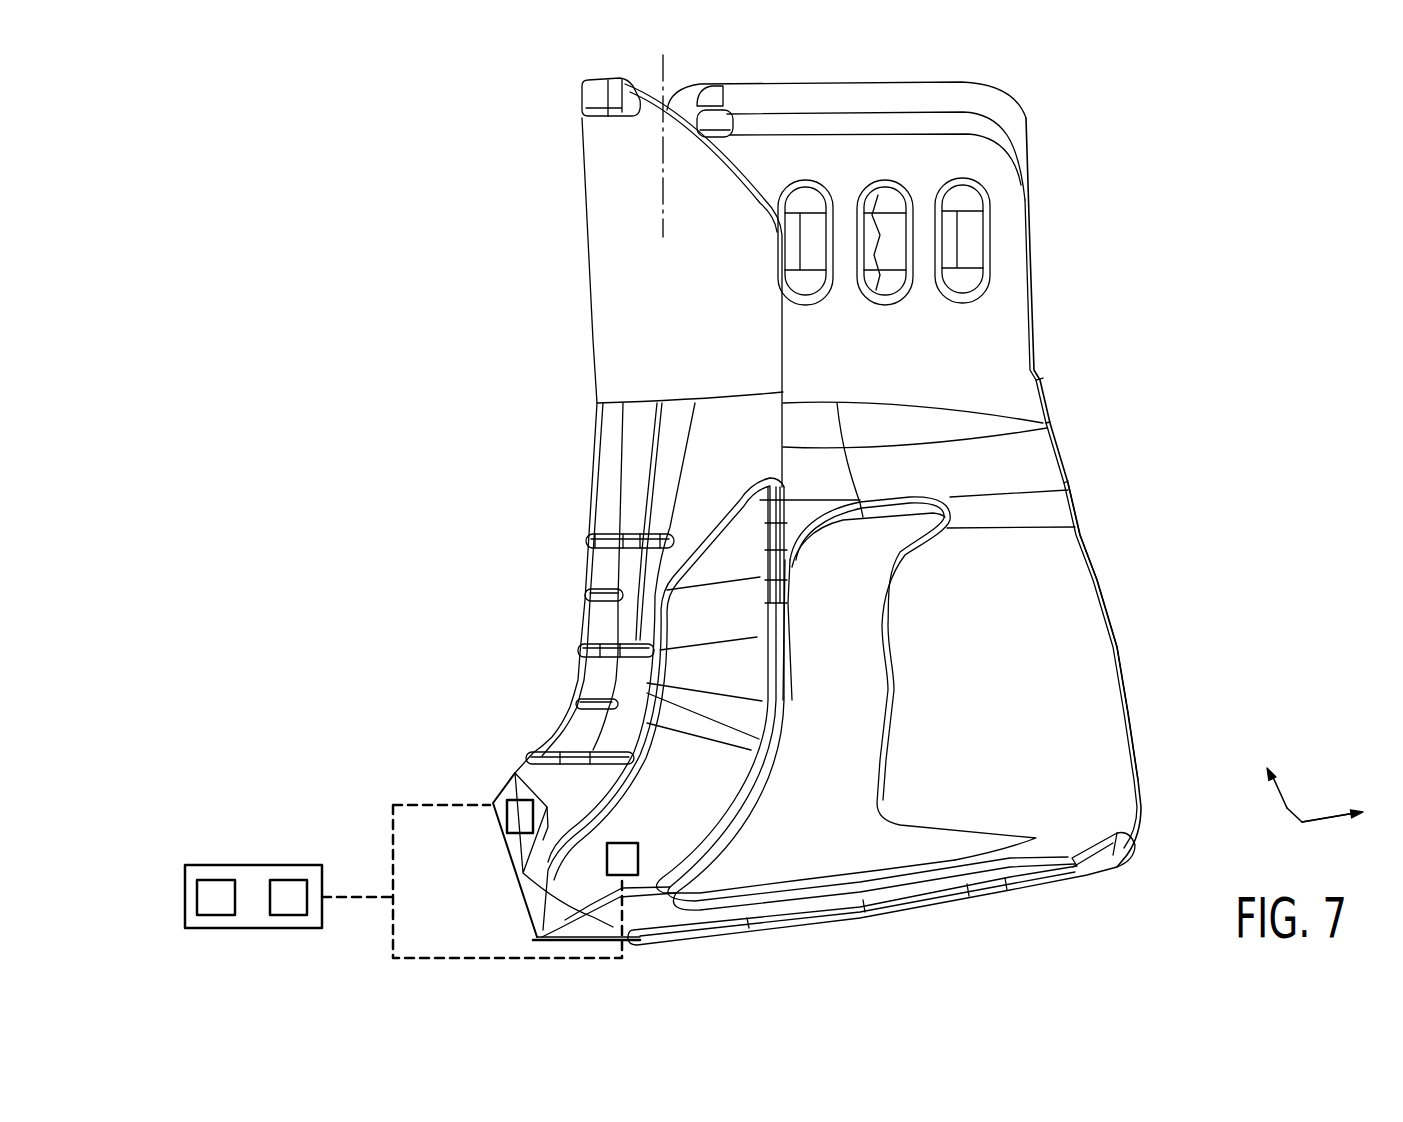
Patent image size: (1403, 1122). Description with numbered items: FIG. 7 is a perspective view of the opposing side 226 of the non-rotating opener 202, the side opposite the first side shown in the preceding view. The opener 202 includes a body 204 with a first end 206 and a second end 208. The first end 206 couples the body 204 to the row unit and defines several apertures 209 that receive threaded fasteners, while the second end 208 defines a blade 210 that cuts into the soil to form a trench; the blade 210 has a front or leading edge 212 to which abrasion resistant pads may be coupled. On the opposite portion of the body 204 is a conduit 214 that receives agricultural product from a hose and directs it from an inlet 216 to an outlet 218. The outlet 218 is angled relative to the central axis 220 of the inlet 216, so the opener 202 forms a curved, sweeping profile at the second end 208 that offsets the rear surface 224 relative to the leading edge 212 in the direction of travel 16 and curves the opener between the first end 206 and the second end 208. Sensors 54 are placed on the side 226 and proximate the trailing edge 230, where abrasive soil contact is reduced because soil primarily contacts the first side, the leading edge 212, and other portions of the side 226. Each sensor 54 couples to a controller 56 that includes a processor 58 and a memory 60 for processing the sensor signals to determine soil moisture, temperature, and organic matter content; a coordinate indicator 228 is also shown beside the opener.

The direction of travel 16 is at (1325, 818).
The sensor 54 is at (505, 820).
The controller 56 is at (185, 897).
The processor 58 is at (210, 880).
The memory 60 is at (283, 880).
The opener 202 is at (1150, 240).
The body 204 is at (405, 562).
The first end 206 is at (945, 90).
The second end 208 is at (877, 905).
The apertures 209 is at (810, 283).
The blade 210 is at (1185, 465).
The front edge 212 is at (1127, 700).
The conduit 214 is at (628, 340).
The inlet 216 is at (620, 80).
The outlet 218 is at (390, 782).
The central axis 220 is at (661, 147).
The rear surface 224 is at (583, 728).
The opposing side 226 is at (1060, 643).
The direction arrows 228 is at (1287, 808).
The trailing edge 230 is at (523, 903).